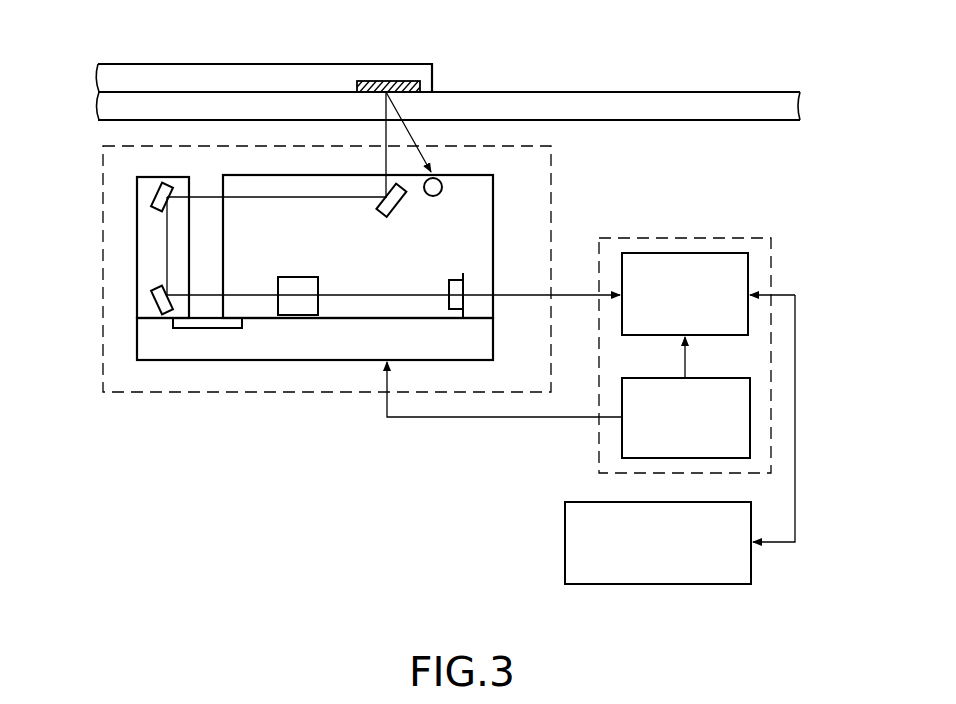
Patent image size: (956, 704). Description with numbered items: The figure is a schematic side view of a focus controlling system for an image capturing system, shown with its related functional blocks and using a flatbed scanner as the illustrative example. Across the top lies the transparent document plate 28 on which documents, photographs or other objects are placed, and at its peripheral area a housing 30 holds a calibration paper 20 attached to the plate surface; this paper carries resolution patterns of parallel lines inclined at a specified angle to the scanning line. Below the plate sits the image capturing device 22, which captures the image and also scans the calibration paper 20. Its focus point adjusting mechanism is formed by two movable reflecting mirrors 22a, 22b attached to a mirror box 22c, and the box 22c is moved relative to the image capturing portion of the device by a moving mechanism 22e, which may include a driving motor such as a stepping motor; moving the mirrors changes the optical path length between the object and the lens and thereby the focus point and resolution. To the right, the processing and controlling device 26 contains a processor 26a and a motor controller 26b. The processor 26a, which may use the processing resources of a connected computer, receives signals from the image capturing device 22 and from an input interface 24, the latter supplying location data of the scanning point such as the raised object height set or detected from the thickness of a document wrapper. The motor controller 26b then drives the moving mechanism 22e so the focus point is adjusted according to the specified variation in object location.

The calibration paper 20 is at (388, 81).
The image capturing device 22 is at (326, 392).
The movable reflecting mirror 22a is at (155, 187).
The movable reflecting mirror 22b is at (155, 296).
The mirror box 22c is at (137, 245).
The moving mechanism 22e is at (238, 350).
The input interface 24 is at (565, 542).
The processing and controlling device 26 is at (770, 258).
The processor 26a is at (748, 318).
The motor controller 26b is at (494, 197).
The document plate 28 is at (800, 103).
The housing 30 is at (268, 64).